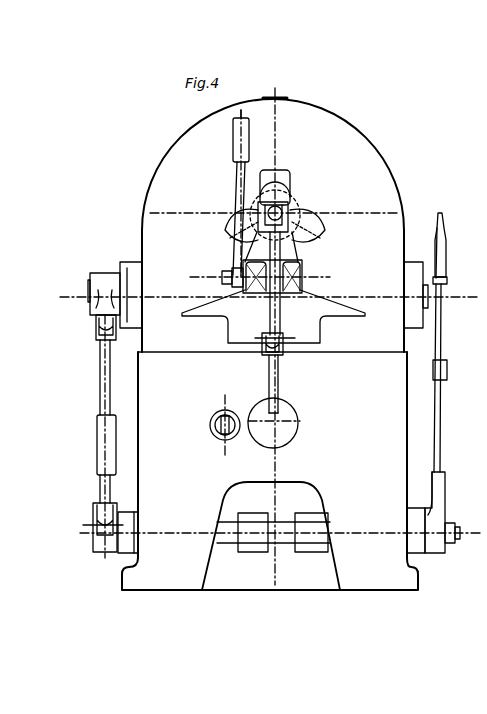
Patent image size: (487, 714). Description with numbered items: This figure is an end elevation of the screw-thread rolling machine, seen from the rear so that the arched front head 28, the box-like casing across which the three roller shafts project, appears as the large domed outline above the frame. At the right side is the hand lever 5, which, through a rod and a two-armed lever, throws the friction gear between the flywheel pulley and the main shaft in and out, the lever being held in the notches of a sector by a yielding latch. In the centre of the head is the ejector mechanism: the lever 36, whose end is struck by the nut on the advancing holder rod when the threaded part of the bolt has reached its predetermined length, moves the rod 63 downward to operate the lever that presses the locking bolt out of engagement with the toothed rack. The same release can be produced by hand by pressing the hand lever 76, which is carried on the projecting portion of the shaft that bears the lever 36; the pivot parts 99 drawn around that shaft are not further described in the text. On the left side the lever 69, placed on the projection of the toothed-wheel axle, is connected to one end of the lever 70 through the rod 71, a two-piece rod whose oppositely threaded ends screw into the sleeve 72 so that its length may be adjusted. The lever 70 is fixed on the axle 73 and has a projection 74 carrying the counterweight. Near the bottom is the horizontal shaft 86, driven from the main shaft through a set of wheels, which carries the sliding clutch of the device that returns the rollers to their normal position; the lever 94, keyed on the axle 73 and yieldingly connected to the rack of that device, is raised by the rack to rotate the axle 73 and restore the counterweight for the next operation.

The front head 28 is at (392, 168).
The hand lever 5 is at (470, 349).
The lever 69 is at (90, 283).
The sleeve 72 is at (97, 437).
The rod 71 is at (100, 494).
The lever 70 is at (93, 543).
The hand lever 76 is at (237, 178).
The pivot bearing 99 is at (291, 190).
The lever 36 is at (278, 320).
The rod 63 is at (302, 384).
The horizontal shaft 86 is at (210, 427).
The lever 94 is at (258, 545).
The axle 73 is at (233, 543).
The projection 74 is at (315, 545).